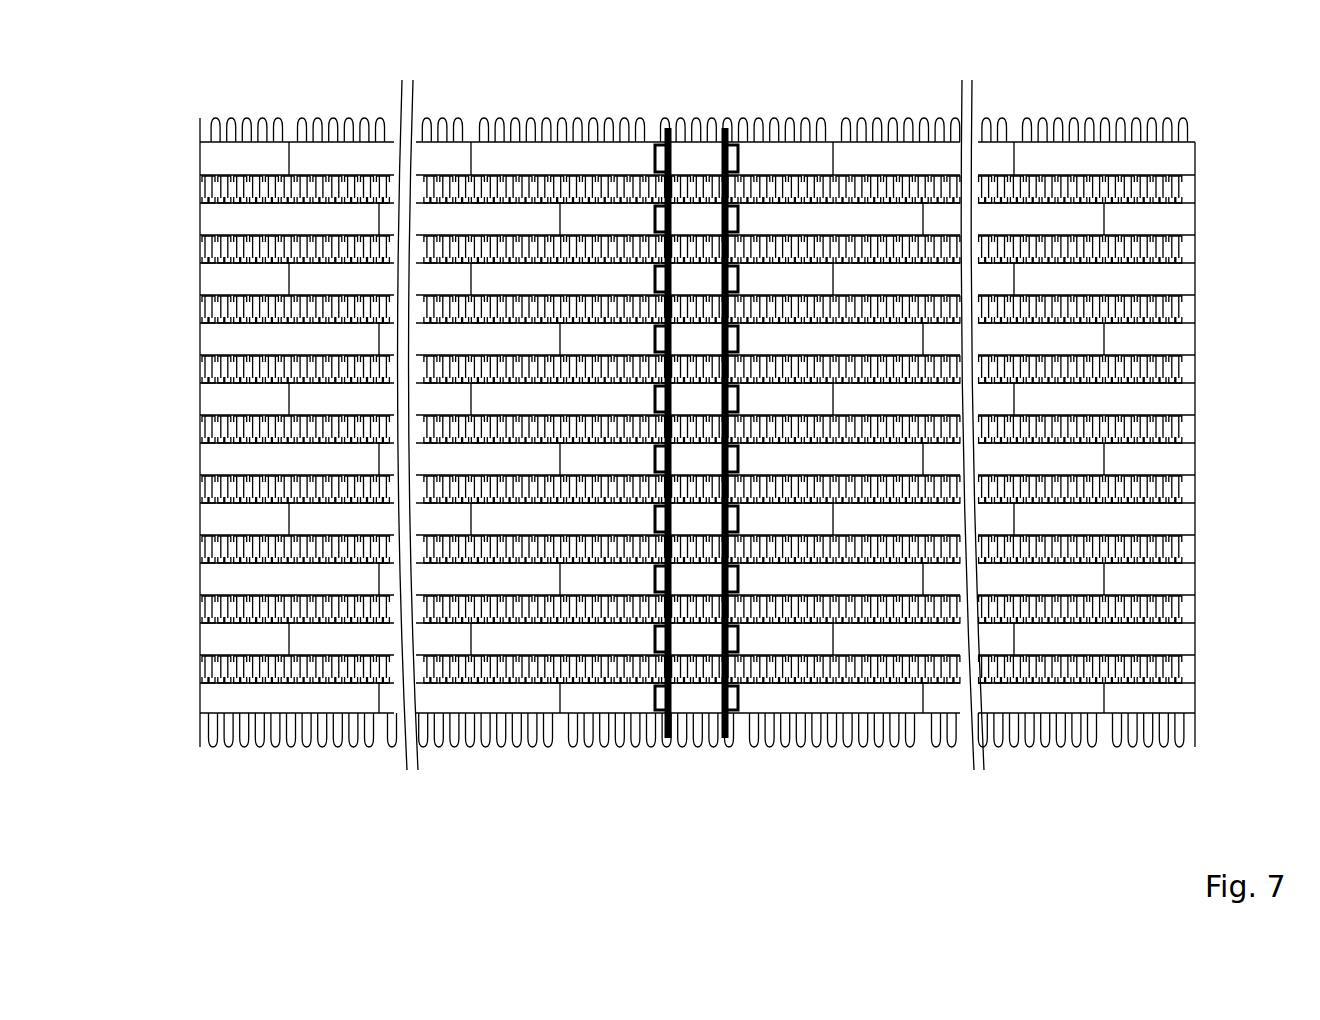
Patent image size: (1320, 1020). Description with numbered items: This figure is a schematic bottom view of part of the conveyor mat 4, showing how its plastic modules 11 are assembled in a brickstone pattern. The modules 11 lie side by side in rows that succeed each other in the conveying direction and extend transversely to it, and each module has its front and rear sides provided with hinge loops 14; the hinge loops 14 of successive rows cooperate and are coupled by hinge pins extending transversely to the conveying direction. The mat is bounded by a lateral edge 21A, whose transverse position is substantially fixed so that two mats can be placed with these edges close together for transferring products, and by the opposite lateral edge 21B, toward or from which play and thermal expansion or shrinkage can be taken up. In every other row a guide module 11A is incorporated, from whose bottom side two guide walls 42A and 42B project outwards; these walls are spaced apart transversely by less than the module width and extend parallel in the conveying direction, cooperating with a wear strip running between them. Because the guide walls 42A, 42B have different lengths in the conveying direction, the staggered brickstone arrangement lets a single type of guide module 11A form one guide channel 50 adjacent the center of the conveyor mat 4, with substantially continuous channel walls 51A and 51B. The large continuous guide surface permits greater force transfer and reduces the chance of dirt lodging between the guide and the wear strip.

The hinge loops 14 is at (318, 116).
The plastic modules 11 is at (528, 160).
The guide module 11A is at (791, 160).
The guide wall 42B is at (663, 128).
The guide wall 42A is at (731, 128).
The lateral edge 21A is at (199, 375).
The lateral edge 21B is at (1196, 352).
The channel wall 51A is at (665, 739).
The channel wall 51B is at (728, 739).
The channel 50 is at (697, 780).
The conveyor mat 4 is at (404, 792).